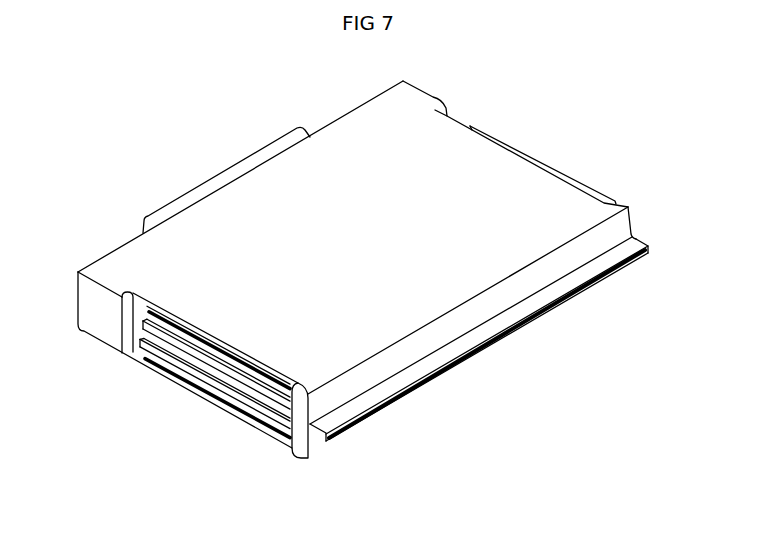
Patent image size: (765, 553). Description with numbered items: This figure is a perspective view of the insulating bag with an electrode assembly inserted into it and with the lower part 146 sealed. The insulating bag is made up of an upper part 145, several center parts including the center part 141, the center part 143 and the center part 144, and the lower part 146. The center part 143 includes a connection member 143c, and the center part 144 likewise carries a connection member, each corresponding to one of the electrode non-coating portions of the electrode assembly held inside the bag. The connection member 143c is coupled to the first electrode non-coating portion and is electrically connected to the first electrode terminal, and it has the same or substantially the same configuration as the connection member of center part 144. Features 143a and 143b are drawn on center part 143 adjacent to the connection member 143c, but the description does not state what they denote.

The center part 141 is at (513, 245).
The center part 143 is at (235, 420).
The upper guide rail 143a is at (232, 363).
The guide groove 143b is at (258, 420).
The connection member 143c is at (147, 337).
The center part 144 is at (528, 132).
The upper part 145 is at (185, 175).
The lower part 146 is at (458, 351).